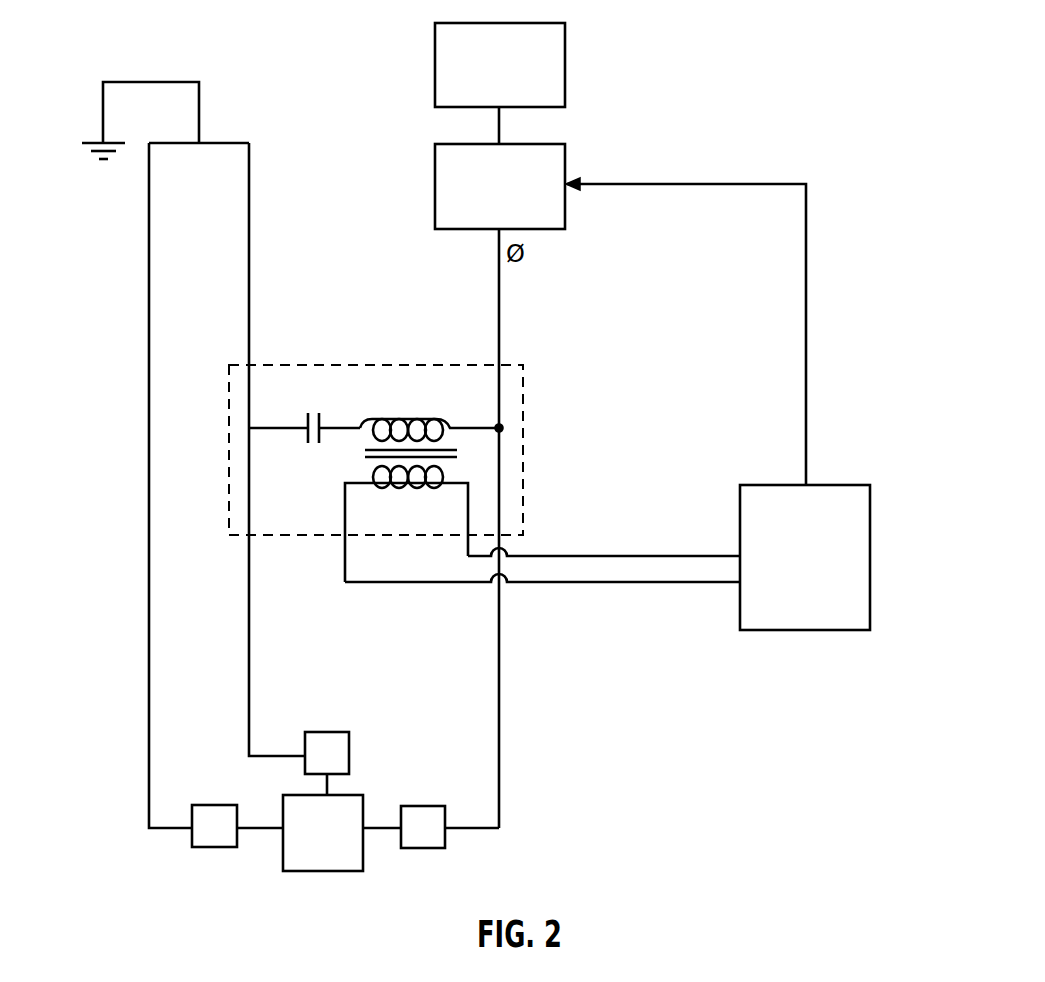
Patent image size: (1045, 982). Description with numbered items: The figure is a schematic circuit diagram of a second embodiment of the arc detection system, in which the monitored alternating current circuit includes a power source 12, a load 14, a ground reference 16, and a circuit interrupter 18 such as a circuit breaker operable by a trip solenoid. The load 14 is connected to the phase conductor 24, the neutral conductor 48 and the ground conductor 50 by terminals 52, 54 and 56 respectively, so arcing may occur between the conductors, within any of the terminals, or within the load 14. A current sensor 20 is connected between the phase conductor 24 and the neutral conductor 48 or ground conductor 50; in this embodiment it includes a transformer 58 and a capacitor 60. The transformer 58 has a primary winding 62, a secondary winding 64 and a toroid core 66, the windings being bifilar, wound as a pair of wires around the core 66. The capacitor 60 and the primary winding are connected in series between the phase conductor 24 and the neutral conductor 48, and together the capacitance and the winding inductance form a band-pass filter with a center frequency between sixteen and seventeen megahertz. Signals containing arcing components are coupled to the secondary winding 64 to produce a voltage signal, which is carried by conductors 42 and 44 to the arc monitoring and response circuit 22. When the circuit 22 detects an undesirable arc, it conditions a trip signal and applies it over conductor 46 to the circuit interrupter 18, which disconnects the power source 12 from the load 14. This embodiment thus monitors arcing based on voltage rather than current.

The power source 12 is at (566, 42).
The load 14 is at (365, 808).
The ground reference 16 is at (101, 140).
The circuit interrupter 18 is at (566, 165).
The current sensor 20 is at (535, 373).
The arc monitoring and response circuit 22 is at (870, 500).
The phase conductor 24 is at (498, 690).
The conductor 42 is at (714, 553).
The conductor 44 is at (717, 585).
The conductor 46 is at (806, 338).
The neutral conductor 48 is at (249, 332).
The ground conductor 50 is at (149, 332).
The terminal 52 is at (447, 815).
The terminal 54 is at (350, 740).
The terminal 56 is at (238, 815).
The transformer 58 is at (464, 388).
The capacitor 60 is at (304, 433).
The primary winding 62 is at (440, 420).
The secondary winding 64 is at (442, 472).
The toroid core 66 is at (457, 450).